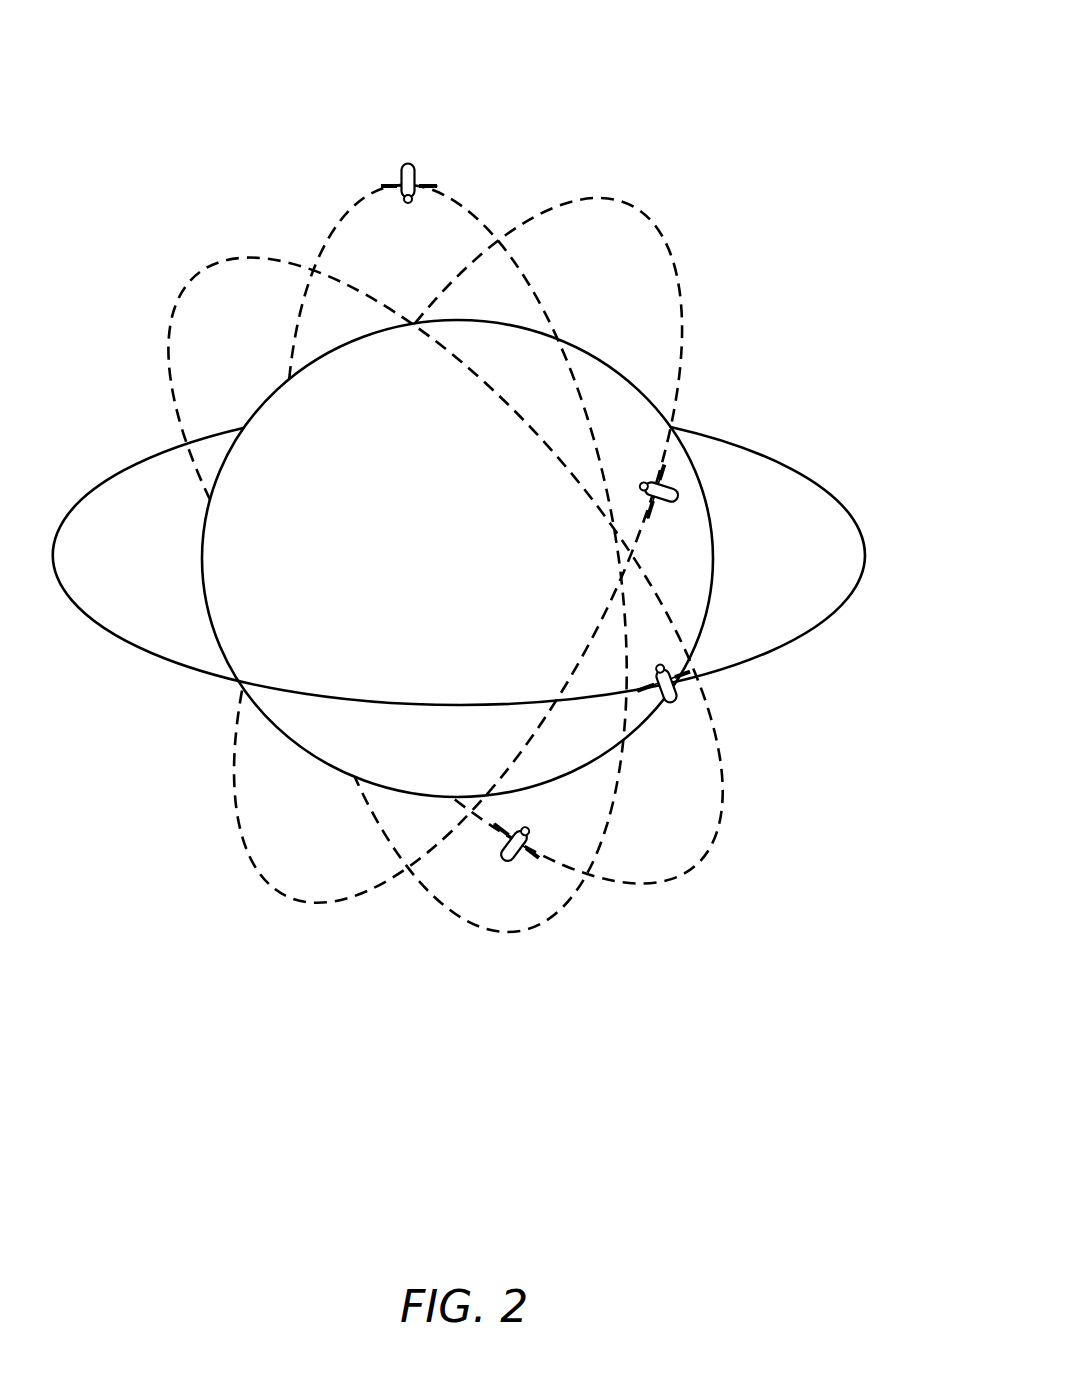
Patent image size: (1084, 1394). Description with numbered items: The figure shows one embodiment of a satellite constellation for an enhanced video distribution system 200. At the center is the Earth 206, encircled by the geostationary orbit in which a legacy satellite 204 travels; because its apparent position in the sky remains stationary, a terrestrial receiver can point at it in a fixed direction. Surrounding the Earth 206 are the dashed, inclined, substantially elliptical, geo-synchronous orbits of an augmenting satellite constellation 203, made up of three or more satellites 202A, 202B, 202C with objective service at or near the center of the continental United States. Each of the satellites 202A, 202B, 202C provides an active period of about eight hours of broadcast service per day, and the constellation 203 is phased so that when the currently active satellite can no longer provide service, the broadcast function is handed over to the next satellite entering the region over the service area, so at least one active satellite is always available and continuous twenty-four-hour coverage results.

The enhanced video distribution system 200 is at (788, 80).
The augmenting satellite constellation 203 is at (678, 110).
The satellite 202A is at (415, 172).
The satellite 202B is at (680, 486).
The satellite 202C is at (505, 859).
The legacy satellite 204 is at (674, 703).
The Earth 206 is at (202, 582).